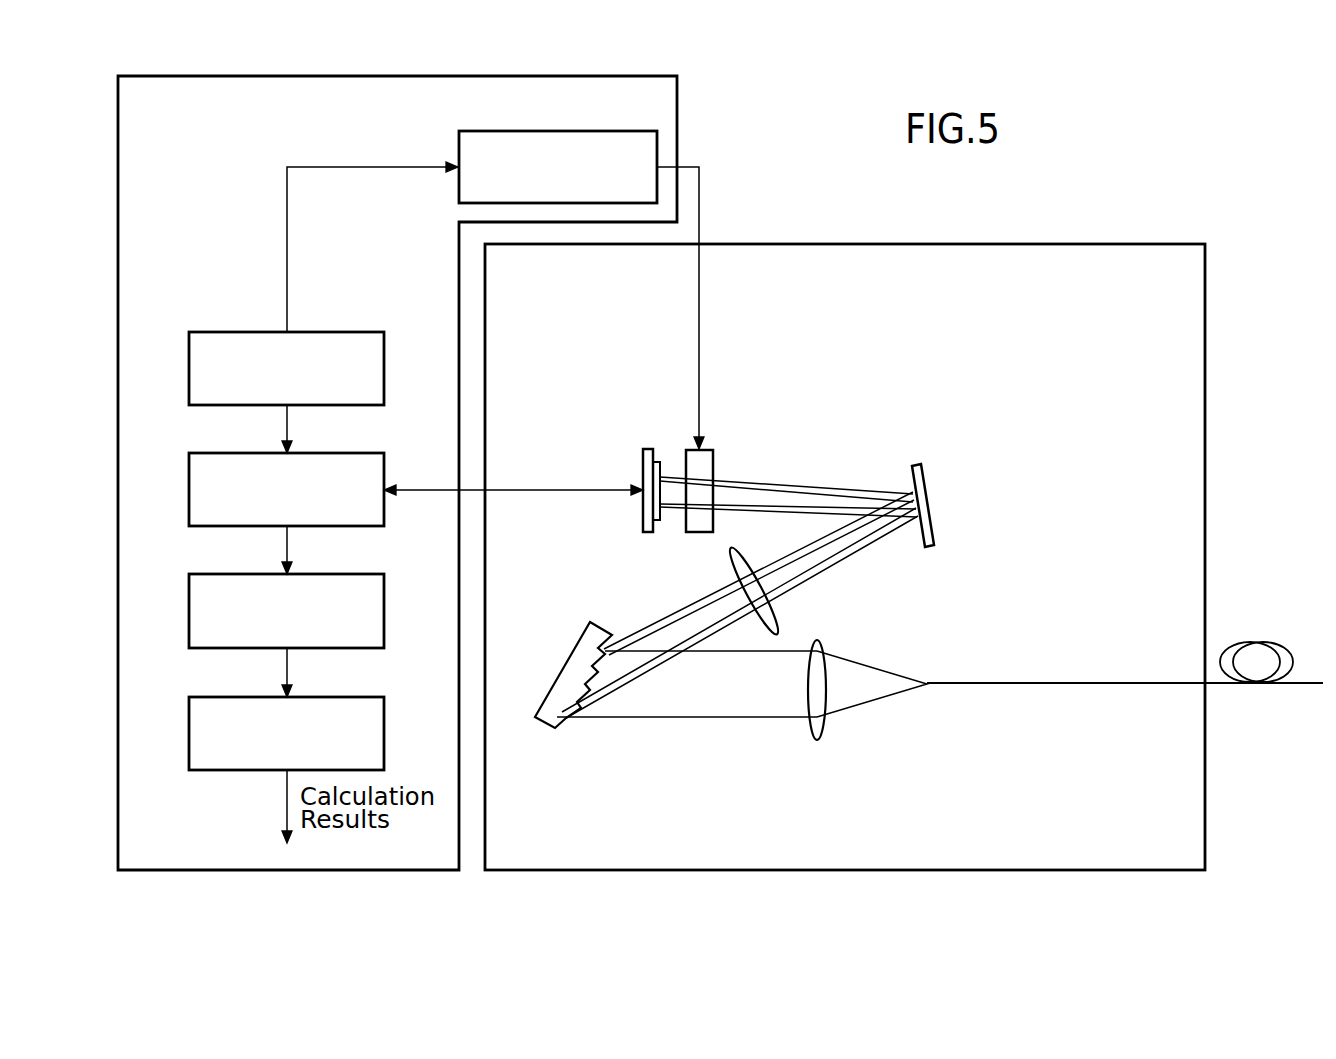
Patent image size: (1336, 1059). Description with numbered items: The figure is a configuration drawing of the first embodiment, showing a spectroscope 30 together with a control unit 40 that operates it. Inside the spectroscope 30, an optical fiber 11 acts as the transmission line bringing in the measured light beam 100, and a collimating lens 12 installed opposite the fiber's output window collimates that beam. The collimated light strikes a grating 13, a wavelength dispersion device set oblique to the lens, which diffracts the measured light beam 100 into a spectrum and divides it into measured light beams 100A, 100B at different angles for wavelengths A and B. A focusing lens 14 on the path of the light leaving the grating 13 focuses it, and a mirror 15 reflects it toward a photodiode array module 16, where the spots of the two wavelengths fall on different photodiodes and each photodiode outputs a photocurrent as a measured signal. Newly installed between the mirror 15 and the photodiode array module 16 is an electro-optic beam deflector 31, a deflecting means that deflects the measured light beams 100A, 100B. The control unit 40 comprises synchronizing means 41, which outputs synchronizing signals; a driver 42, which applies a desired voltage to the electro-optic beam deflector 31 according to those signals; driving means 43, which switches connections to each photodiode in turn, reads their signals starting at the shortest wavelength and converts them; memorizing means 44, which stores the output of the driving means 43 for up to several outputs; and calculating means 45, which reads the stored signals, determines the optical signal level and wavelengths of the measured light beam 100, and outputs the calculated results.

The control unit 40 is at (679, 120).
The driver 42 is at (459, 141).
The synchronizing means 41 is at (189, 375).
The driving means 43 is at (189, 481).
The memorizing means 44 is at (189, 617).
The calculating means 45 is at (189, 742).
The spectroscope 30 is at (849, 243).
The electro-optic beam deflector 31 is at (713, 470).
The measured light beam 100A is at (812, 484).
The measured light beam 100B is at (878, 500).
The mirror 15 is at (934, 500).
The photodiode array module 16 is at (643, 517).
The focusing lens 14 is at (776, 608).
The grating 13 is at (540, 735).
The measured light beam 100 is at (877, 702).
The collimating lens 12 is at (818, 740).
The optical fiber 11 is at (962, 685).